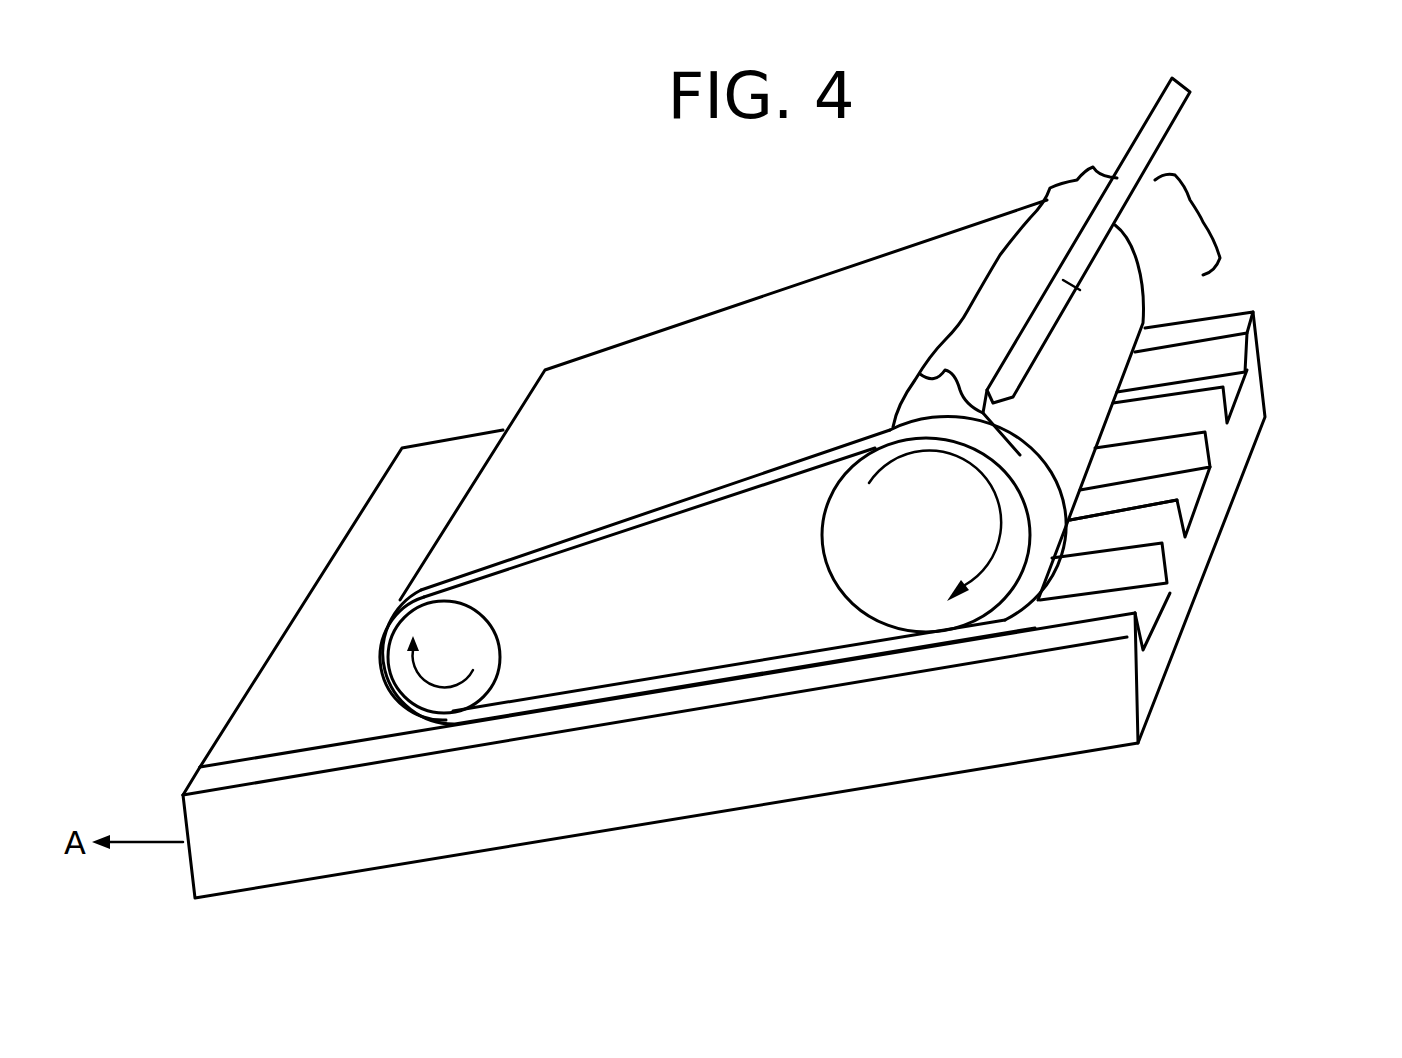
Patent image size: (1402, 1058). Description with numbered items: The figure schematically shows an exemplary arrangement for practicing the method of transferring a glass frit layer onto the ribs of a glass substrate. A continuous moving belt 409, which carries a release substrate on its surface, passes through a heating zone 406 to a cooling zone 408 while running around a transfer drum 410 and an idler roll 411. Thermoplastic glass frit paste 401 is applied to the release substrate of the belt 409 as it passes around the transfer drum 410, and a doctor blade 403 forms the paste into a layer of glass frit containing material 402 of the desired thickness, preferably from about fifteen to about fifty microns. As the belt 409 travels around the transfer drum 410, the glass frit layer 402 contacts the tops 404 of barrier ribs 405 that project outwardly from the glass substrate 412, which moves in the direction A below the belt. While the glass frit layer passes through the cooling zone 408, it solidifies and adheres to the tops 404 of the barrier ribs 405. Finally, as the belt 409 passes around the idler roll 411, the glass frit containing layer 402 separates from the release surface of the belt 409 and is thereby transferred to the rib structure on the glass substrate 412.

The thermoplastic glass frit paste 401 is at (1085, 170).
The layer of glass frit containing material 402 is at (1035, 497).
The doctor blade 403 is at (1155, 130).
The tops of barrier ribs 404 is at (1117, 535).
The barrier ribs 405 is at (1175, 542).
The heating zone 406 is at (1203, 208).
The cooling zone 408 is at (835, 630).
The continuous moving belt 409 is at (696, 419).
The transfer drum 410 is at (910, 593).
The idler roll 411 is at (470, 663).
The glass substrate 412 is at (1143, 667).